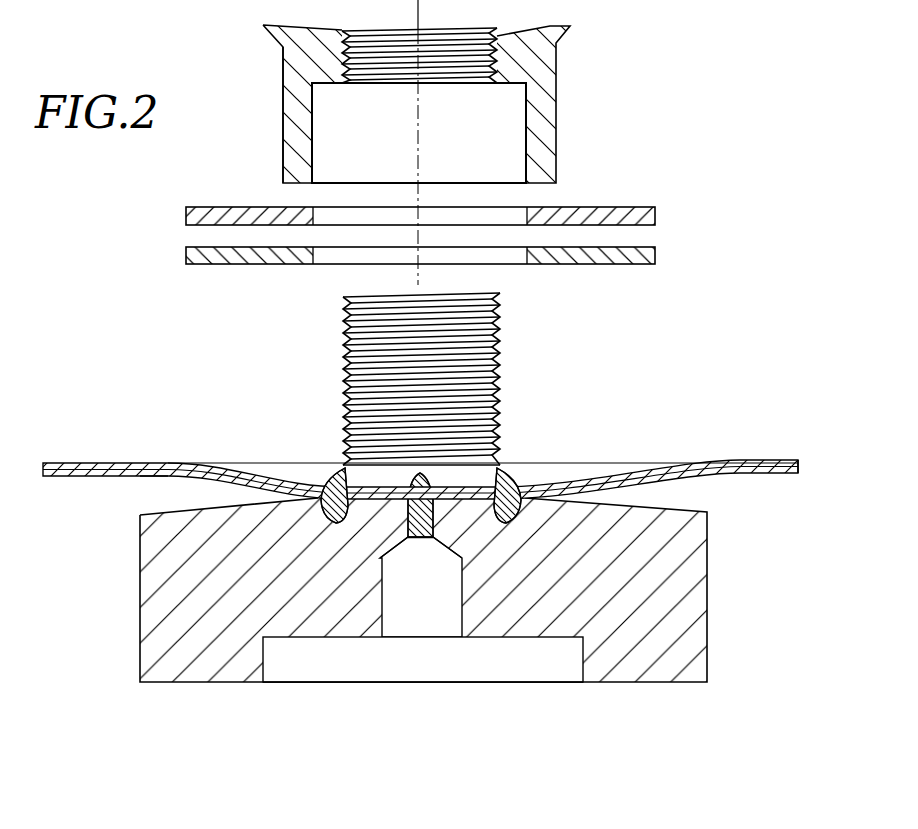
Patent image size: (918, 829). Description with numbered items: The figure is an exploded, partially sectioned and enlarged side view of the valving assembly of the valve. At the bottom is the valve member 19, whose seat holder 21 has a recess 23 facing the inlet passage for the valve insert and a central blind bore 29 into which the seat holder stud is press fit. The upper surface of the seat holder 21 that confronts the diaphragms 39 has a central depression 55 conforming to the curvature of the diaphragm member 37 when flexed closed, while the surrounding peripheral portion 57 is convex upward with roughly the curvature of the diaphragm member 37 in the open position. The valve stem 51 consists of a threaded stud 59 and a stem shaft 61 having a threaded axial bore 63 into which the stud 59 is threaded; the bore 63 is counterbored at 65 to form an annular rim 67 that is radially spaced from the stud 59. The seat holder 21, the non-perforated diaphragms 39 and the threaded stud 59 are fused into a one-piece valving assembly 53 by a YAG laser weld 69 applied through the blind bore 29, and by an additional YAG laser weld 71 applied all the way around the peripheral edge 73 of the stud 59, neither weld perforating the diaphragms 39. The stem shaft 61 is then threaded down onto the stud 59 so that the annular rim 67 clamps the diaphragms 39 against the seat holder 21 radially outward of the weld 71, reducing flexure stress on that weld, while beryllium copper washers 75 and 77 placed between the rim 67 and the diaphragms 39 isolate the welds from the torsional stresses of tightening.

The valve member 19 is at (98, 652).
The seat holder 21 is at (687, 607).
The recess 23 is at (583, 665).
The blind bore 29 is at (390, 623).
The diaphragm member 37 is at (745, 447).
The diaphragms 39 is at (797, 472).
The valve stem 51 is at (142, 311).
The one-piece valving assembly 53 is at (157, 249).
The central depression 55 is at (460, 497).
The peripheral portion 57 is at (150, 507).
The threaded stud 59 is at (498, 328).
The stem shaft 61 is at (545, 113).
The threaded axial bore 63 is at (432, 73).
The counterbore 65 is at (318, 113).
The annular rim 67 is at (296, 156).
The YAG laser weld 69 is at (407, 522).
The additional YAG laser weld 71 is at (505, 470).
The peripheral edge 73 is at (340, 468).
The washer 75 is at (640, 253).
The washer 77 is at (637, 215).